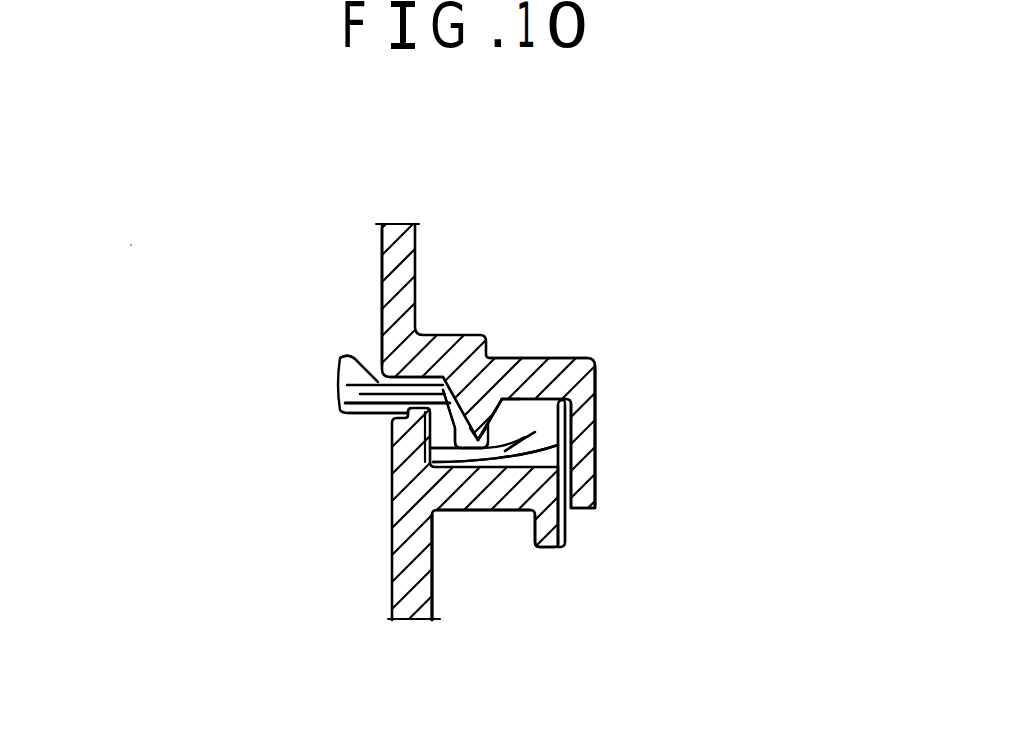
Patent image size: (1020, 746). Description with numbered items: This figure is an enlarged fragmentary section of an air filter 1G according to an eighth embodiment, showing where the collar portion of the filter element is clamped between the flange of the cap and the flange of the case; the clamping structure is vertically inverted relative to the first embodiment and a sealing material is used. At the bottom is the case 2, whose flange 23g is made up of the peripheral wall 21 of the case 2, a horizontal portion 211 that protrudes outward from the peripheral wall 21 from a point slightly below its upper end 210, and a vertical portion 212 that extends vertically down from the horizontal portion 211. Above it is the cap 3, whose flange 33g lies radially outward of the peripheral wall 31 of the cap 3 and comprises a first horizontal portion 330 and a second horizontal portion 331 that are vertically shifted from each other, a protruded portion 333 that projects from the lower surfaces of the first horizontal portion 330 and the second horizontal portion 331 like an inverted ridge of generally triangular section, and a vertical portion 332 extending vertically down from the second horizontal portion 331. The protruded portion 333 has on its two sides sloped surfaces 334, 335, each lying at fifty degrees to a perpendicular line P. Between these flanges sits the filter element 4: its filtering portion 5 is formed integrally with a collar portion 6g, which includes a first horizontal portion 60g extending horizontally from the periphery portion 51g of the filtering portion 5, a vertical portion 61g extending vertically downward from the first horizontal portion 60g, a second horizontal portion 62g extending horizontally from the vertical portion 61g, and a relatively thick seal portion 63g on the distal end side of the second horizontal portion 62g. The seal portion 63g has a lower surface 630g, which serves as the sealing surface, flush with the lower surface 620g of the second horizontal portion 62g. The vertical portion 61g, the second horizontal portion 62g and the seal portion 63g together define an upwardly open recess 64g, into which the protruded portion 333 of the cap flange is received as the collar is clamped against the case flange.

The air filter 1G is at (244, 295).
The case 2 is at (382, 593).
The peripheral wall 21 is at (431, 518).
The upper end 210 is at (405, 413).
The horizontal portion 211 is at (489, 511).
The vertical portion 212 is at (548, 521).
The flange 23g is at (640, 540).
The cap 3 is at (376, 258).
The peripheral wall 31 is at (381, 303).
The flange 33g is at (660, 140).
The first horizontal portion 330 is at (458, 353).
The second horizontal portion 331 is at (555, 380).
The vertical portion 332 is at (596, 436).
The protruded portion 333 is at (496, 397).
The sloped surface 334 is at (441, 398).
The sloped surface 335 is at (516, 398).
The perpendicular line P is at (468, 400).
The filter element 4 is at (283, 357).
The filtering portion 5 is at (341, 359).
The periphery portion 51g is at (342, 398).
The collar portion 6g is at (132, 400).
The first horizontal portion 60g is at (340, 412).
The vertical portion 61g is at (438, 410).
The second horizontal portion 62g is at (455, 430).
The seal portion 63g is at (465, 447).
The recess 64g is at (445, 420).
The lower surface 620g is at (560, 443).
The lower surface 630g is at (560, 447).